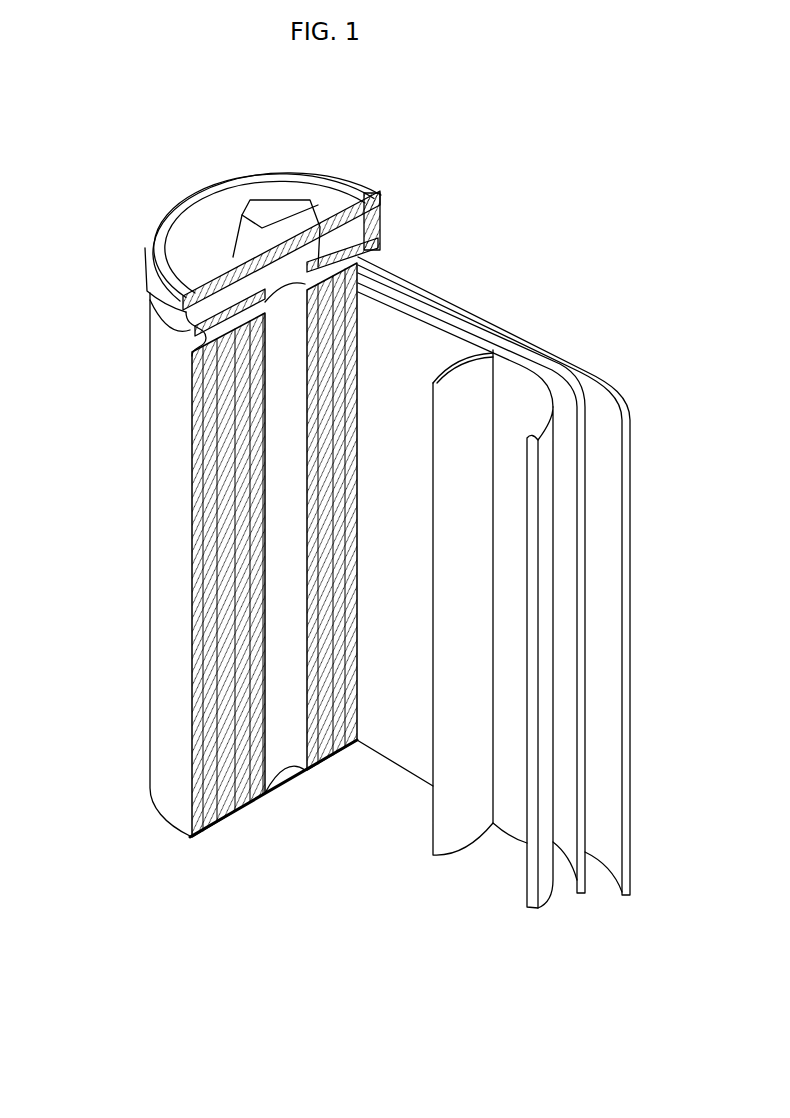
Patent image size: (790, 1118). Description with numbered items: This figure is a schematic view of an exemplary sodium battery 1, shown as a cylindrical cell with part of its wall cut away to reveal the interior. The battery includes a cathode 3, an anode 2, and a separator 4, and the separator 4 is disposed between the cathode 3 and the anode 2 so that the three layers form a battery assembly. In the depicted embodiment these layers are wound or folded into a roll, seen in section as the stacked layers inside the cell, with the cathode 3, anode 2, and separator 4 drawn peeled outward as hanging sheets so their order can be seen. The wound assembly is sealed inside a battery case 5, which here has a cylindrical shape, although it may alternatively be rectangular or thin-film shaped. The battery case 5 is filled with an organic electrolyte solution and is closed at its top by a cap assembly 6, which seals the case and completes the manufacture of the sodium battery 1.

The sodium battery 1 is at (462, 195).
The anode 2 is at (625, 403).
The cathode 3 is at (512, 360).
The separator 4 is at (450, 313).
The battery case 5 is at (160, 538).
The cap assembly 6 is at (262, 205).